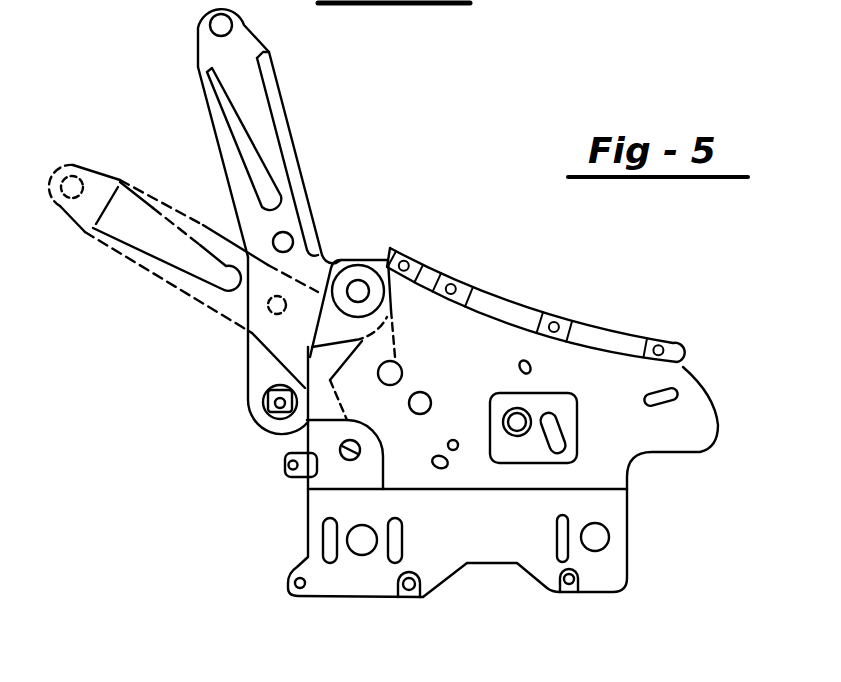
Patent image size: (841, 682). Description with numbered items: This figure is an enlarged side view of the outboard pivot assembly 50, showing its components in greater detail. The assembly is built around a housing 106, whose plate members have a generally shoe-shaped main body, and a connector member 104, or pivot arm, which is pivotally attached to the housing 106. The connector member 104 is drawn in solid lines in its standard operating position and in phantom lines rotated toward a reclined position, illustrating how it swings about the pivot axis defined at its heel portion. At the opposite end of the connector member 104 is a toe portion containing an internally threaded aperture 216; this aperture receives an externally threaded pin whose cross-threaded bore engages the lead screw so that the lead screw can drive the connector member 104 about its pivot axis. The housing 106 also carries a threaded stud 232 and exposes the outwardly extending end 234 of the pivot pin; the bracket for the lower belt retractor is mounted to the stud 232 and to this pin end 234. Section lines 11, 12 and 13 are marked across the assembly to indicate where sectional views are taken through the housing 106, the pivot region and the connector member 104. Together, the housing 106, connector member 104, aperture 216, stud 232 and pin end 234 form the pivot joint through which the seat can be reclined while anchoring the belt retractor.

The outboard pivot assembly 50 is at (124, 132).
The connector member 104 is at (292, 125).
The housing 106 is at (605, 365).
The section line 11 is at (360, 291).
The section line 12 is at (705, 398).
The section line 13 is at (515, 315).
The internally threaded aperture 216 is at (280, 432).
The threaded stud 232 is at (343, 455).
The outwardly extending end of pivot pin 234 is at (362, 290).